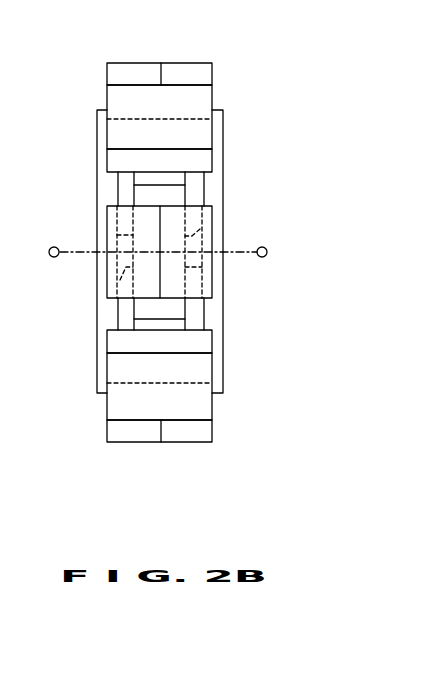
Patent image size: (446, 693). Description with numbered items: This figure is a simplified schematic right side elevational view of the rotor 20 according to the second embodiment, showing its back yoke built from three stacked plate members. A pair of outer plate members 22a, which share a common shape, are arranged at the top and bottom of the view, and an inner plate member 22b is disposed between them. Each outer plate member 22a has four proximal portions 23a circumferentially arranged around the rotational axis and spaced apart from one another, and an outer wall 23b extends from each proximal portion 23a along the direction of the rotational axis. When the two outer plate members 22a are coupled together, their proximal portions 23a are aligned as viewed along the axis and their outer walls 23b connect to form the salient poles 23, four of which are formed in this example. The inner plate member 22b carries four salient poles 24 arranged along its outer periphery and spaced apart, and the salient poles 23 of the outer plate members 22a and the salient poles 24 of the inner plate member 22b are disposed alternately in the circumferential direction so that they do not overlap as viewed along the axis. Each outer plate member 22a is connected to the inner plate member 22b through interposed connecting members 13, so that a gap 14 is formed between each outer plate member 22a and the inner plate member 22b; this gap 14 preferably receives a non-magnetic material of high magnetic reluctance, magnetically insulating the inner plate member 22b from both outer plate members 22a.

The rotor 20 is at (239, 106).
The salient pole 23 is at (173, 57).
The salient pole 24 is at (105, 99).
The outer plate member 22a is at (97, 140).
The gap 14 is at (116, 193).
The inner plate member 22b is at (170, 195).
The proximal portion 23a is at (105, 222).
The outer wall 23b is at (143, 260).
The connecting member 13 is at (120, 279).